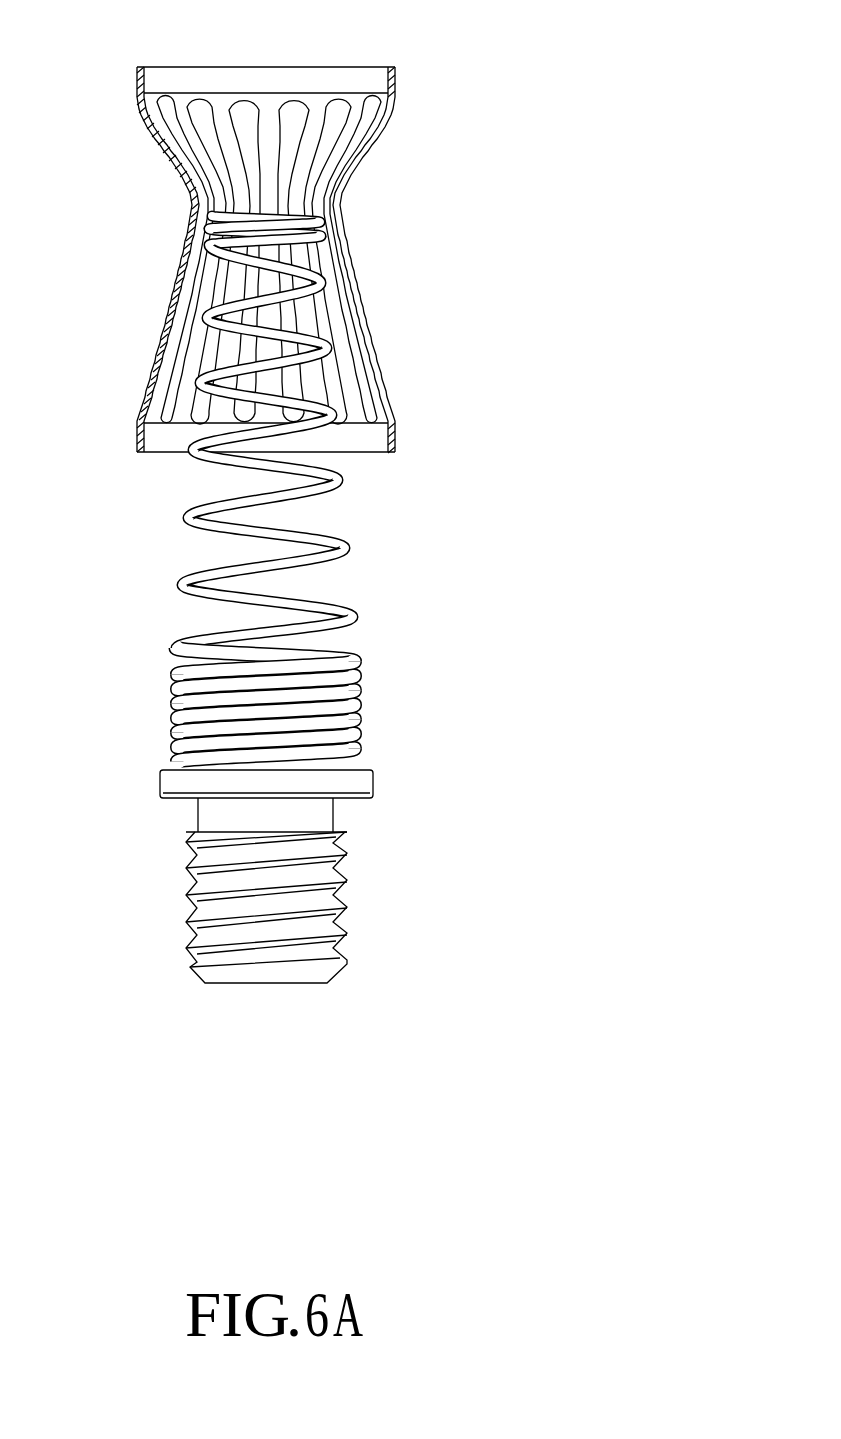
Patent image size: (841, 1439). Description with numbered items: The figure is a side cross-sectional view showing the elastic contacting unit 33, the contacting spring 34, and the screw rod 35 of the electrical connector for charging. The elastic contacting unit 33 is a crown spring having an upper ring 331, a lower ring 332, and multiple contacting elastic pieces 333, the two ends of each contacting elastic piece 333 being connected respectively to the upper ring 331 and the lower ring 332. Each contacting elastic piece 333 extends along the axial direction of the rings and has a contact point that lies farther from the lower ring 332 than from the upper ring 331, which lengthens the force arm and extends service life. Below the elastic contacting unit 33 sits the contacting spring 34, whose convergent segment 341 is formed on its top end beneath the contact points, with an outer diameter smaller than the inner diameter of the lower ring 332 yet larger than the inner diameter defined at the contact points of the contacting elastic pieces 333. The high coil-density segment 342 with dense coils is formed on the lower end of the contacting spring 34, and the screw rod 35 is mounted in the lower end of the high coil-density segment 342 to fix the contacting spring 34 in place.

The elastic contacting unit 33 is at (283, 491).
The upper ring 331 is at (140, 88).
The lower ring 332 is at (137, 435).
The contacting elastic pieces 333 is at (178, 282).
The contacting spring 34 is at (355, 548).
The convergent segment 341 is at (308, 215).
The high coil-density segment 342 is at (352, 756).
The screw rod 35 is at (178, 782).